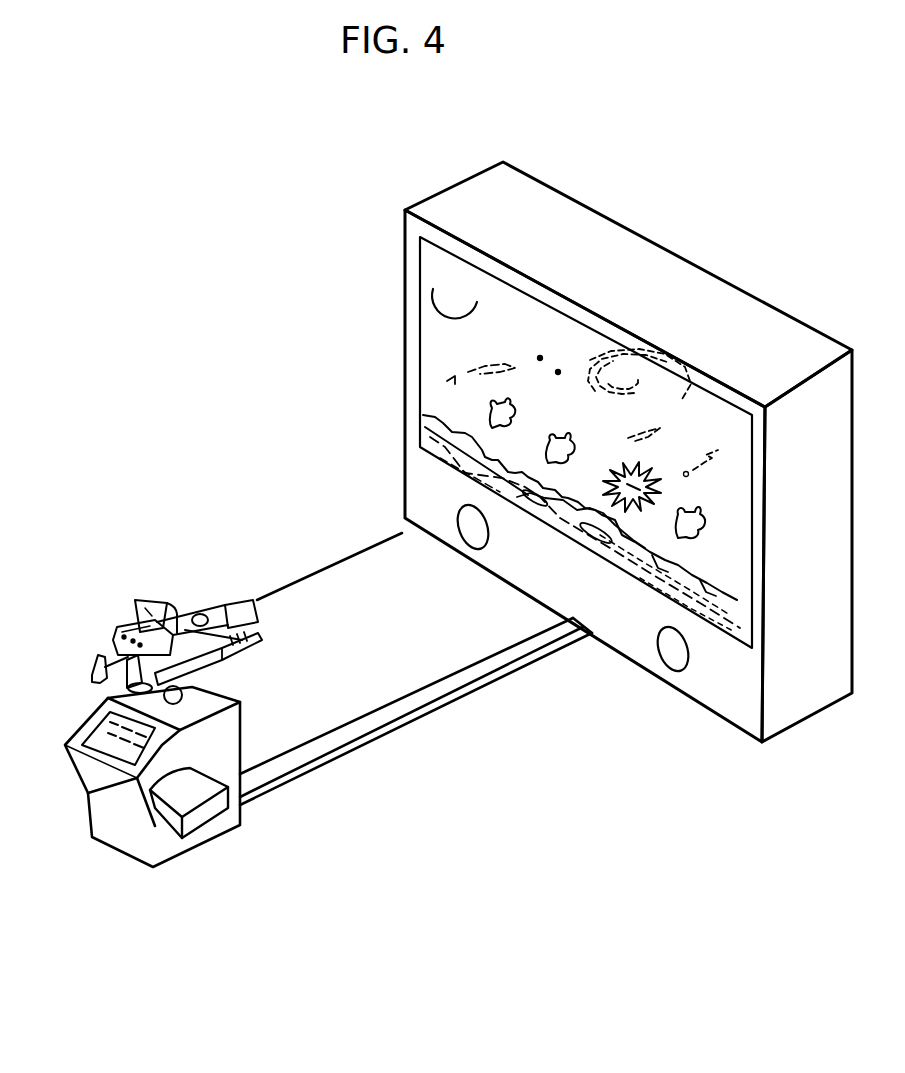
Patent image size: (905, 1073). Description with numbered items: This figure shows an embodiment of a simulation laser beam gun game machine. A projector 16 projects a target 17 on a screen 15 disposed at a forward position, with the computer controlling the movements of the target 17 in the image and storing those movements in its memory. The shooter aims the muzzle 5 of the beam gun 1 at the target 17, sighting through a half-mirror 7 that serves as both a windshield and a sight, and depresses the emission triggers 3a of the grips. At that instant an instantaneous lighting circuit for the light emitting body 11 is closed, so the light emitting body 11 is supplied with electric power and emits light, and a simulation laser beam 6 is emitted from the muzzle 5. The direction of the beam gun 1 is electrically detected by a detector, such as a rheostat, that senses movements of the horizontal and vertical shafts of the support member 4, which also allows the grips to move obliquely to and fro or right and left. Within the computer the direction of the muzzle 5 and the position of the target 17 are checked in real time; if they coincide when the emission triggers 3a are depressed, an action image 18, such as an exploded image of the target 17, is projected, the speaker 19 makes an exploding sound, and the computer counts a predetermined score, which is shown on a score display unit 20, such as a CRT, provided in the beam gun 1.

The beam gun 1 is at (163, 572).
The emission triggers 3a is at (128, 662).
The support member 4 is at (233, 692).
The muzzle 5 is at (195, 612).
The simulation laser beam 6 is at (330, 567).
The half-mirror 7 is at (152, 603).
The light emitting body 11 is at (260, 643).
The screen 15 is at (453, 332).
The projector 16 is at (210, 810).
The target 17 is at (485, 420).
The action image 18 is at (637, 510).
The speaker 19 is at (473, 533).
The score display unit 20 is at (553, 310).